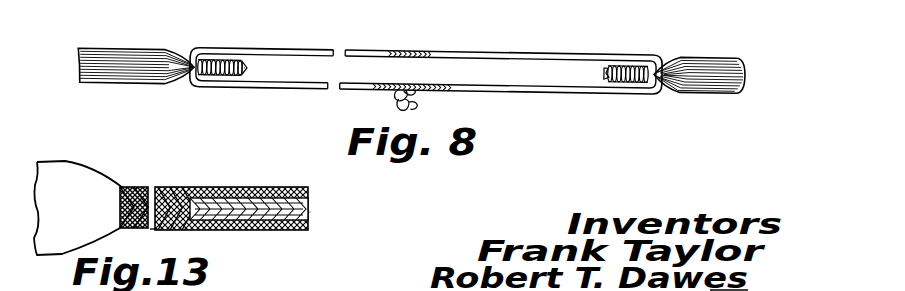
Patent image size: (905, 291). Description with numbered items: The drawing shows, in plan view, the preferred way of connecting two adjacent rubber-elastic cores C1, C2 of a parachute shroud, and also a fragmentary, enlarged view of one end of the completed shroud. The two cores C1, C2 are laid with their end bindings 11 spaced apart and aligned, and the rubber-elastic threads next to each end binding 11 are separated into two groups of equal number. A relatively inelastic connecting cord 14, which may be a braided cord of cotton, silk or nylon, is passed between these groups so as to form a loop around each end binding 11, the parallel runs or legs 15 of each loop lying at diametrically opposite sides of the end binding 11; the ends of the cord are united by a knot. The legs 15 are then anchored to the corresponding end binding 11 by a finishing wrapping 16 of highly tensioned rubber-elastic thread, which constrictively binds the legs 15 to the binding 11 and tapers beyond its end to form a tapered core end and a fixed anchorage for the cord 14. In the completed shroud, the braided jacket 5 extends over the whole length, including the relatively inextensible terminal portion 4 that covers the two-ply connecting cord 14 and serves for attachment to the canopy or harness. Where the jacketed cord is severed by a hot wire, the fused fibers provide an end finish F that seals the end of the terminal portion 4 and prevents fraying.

In FIG. 13, the terminal portion 4 is at (303, 173).
In FIG. 13, the braided jacket 5 is at (54, 169).
In FIG. 8, the end binding 11 is at (222, 66).
In FIG. 8, the connecting cord 14 is at (283, 49).
In FIG. 13, the connecting cord 14 is at (240, 190).
In FIG. 8, the legs of loop 15 is at (213, 47).
In FIG. 8, the finishing wrapping 16 is at (414, 105).
In FIG. 8, the rubber-elastic core C1 is at (150, 41).
In FIG. 8, the rubber-elastic core C2 is at (700, 55).
In FIG. 13, the end finish F is at (309, 212).